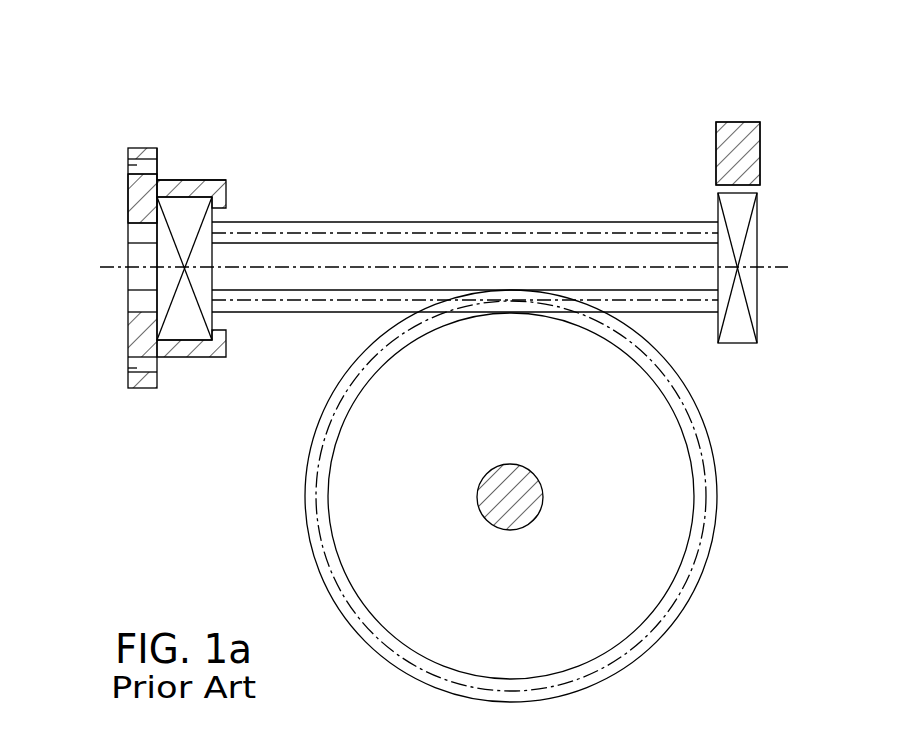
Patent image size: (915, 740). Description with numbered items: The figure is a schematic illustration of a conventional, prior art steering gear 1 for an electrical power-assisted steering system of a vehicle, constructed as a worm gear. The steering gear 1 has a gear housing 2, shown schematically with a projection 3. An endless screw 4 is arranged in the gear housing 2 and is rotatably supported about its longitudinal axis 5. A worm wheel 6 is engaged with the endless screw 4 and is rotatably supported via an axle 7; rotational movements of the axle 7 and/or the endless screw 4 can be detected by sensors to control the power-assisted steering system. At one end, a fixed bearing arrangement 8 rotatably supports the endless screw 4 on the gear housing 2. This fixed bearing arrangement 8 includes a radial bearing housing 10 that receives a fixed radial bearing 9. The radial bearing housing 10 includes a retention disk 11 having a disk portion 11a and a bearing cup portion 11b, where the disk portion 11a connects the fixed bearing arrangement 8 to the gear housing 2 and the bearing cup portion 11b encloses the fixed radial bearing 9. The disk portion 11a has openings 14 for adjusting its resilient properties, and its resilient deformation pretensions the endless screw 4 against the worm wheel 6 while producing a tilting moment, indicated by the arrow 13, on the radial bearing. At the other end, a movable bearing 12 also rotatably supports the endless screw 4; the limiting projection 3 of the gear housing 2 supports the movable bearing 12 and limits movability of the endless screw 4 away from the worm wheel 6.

The steering gear 1 is at (321, 113).
The gear housing 2 is at (763, 147).
The projection 3 is at (747, 132).
The endless screw 4 is at (560, 257).
The longitudinal axis 5 is at (640, 267).
The worm wheel 6 is at (620, 567).
The axle 7 is at (532, 510).
The fixed bearing arrangement 8 is at (142, 388).
The fixed radial bearing 9 is at (202, 255).
The radial bearing housing 10 is at (186, 364).
The retention disk 11 is at (128, 342).
The disk portion 11a is at (154, 147).
The bearing cup portion 11b is at (200, 181).
The movable bearing 12 is at (740, 218).
The arrow 13 is at (87, 133).
The openings 14 is at (137, 165).